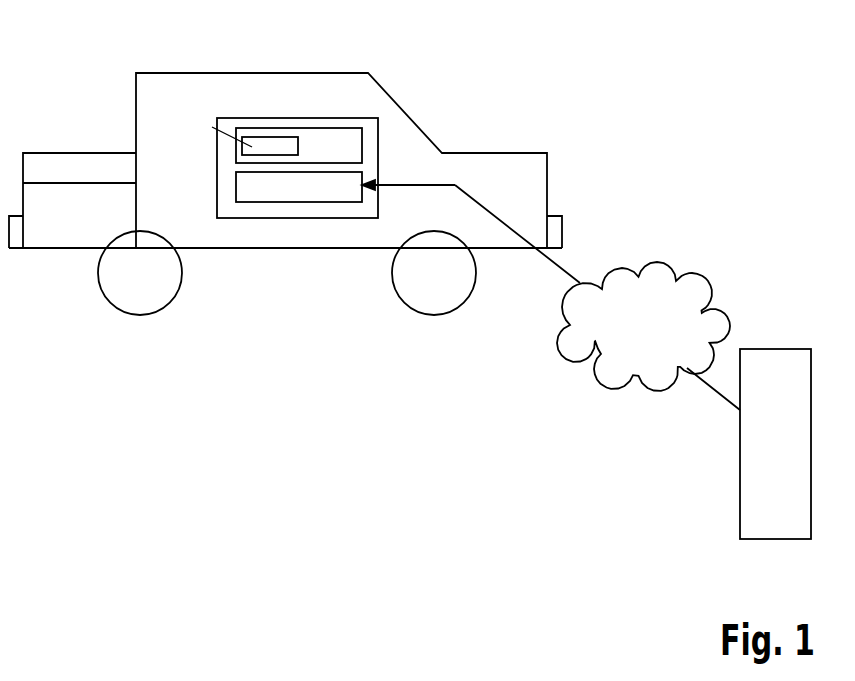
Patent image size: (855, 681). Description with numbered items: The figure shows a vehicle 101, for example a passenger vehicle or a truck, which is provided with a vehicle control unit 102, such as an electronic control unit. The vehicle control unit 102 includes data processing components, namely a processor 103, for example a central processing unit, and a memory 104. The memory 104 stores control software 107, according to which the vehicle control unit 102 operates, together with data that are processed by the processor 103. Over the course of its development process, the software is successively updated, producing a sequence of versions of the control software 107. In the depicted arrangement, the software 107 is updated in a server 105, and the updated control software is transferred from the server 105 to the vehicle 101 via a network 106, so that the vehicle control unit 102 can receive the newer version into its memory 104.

The vehicle 101 is at (185, 73).
The vehicle control unit 102 is at (240, 118).
The processor 103 is at (217, 146).
The memory 104 is at (217, 186).
The server 105 is at (775, 349).
The network 106 is at (651, 268).
The control software 107 is at (288, 137).